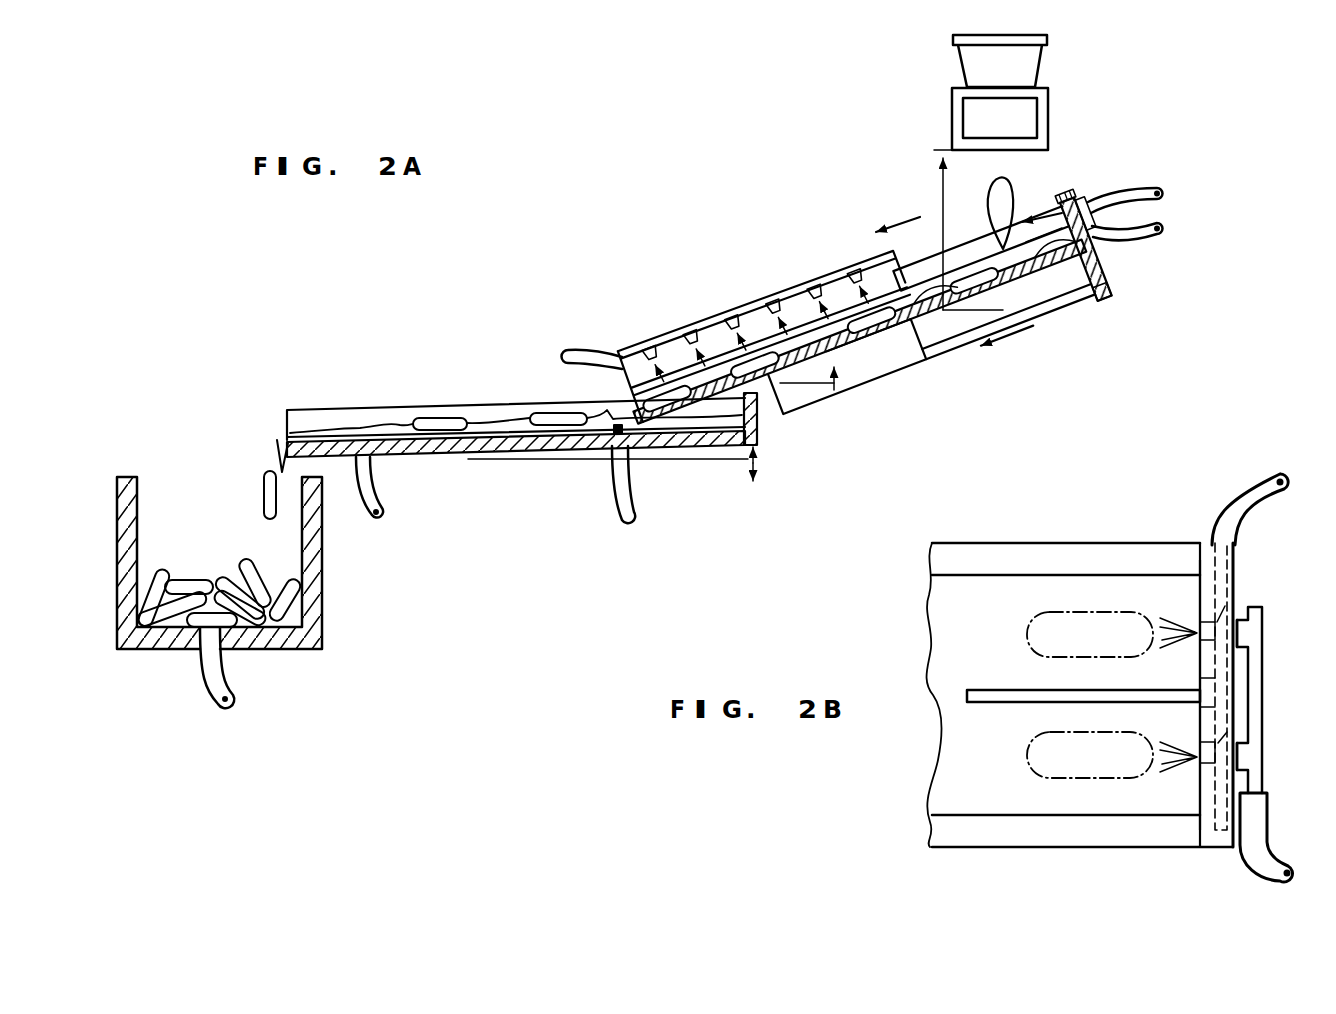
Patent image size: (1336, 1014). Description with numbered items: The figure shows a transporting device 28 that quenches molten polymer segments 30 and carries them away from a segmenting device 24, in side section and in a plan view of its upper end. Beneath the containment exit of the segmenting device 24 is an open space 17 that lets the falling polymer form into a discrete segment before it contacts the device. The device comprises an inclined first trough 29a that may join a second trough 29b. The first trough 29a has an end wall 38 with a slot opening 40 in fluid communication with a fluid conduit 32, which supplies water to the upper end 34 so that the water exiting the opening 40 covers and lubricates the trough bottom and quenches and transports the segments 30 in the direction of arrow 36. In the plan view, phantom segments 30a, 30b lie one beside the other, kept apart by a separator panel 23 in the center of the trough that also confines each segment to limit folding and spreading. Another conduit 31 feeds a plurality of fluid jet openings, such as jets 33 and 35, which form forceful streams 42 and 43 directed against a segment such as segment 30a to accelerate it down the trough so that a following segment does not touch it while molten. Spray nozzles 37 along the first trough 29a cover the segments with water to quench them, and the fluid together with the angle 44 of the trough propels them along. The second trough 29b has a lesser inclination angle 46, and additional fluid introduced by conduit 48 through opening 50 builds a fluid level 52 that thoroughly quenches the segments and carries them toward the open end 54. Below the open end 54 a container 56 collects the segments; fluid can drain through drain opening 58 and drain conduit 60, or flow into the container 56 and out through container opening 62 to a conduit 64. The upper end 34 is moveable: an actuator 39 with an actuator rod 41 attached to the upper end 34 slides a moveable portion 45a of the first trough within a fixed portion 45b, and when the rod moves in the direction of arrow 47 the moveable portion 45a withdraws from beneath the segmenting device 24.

In FIG. 2A, the open space 17 is at (943, 200).
In FIG. 2B, the separator panel 23 is at (985, 692).
In FIG. 2A, the segmenting device 24 is at (1058, 104).
In FIG. 2A, the transporting device 28 is at (571, 341).
In FIG. 2A, the first trough 29a is at (1222, 270).
In FIG. 2A, the second trough 29b is at (507, 543).
In FIG. 2A, the segments 30 is at (806, 318).
In FIG. 2A, the phantom segment 30a is at (1012, 194).
In FIG. 2B, the phantom segment 30a is at (1055, 779).
In FIG. 2B, the phantom segment 30b is at (1080, 611).
In FIG. 2A, the conduit 31 is at (1165, 196).
In FIG. 2B, the conduit 31 is at (1276, 857).
In FIG. 2A, the fluid conduit 32 is at (1165, 232).
In FIG. 2B, the fluid conduit 32 is at (1268, 476).
In FIG. 2A, the fluid jet opening 33 is at (1090, 202).
In FIG. 2B, the fluid jet opening 33 is at (1240, 723).
In FIG. 2A, the upper end 34 is at (1108, 288).
In FIG. 2B, the fluid jet opening 35 is at (1237, 594).
In FIG. 2A, the arrow 36 is at (898, 222).
In FIG. 2A, the spray nozzles 37 is at (653, 352).
In FIG. 2A, the end wall 38 is at (1075, 198).
In FIG. 2A, the actuator 39 is at (782, 414).
In FIG. 2A, the slot opening 40 is at (1104, 256).
In FIG. 2B, the slot opening 40 is at (1200, 778).
In FIG. 2A, the actuator rod 41 is at (950, 352).
In FIG. 2A, the forceful stream 42 is at (1020, 220).
In FIG. 2B, the forceful stream 42 is at (1170, 770).
In FIG. 2B, the forceful stream 43 is at (1176, 630).
In FIG. 2A, the angle 44 is at (836, 388).
In FIG. 2A, the moveable portion 45a is at (1047, 258).
In FIG. 2A, the fixed portion 45b is at (875, 347).
In FIG. 2A, the inclination angle 46 is at (760, 463).
In FIG. 2A, the arrow 47 is at (1003, 330).
In FIG. 2A, the conduit 48 is at (632, 493).
In FIG. 2A, the opening 50 is at (617, 434).
In FIG. 2A, the fluid level 52 is at (498, 420).
In FIG. 2A, the open end 54 is at (283, 430).
In FIG. 2A, the container 56 is at (322, 590).
In FIG. 2A, the drain opening 58 is at (377, 457).
In FIG. 2A, the drain conduit 60 is at (380, 518).
In FIG. 2A, the container opening 62 is at (200, 653).
In FIG. 2A, the conduit 64 is at (235, 684).